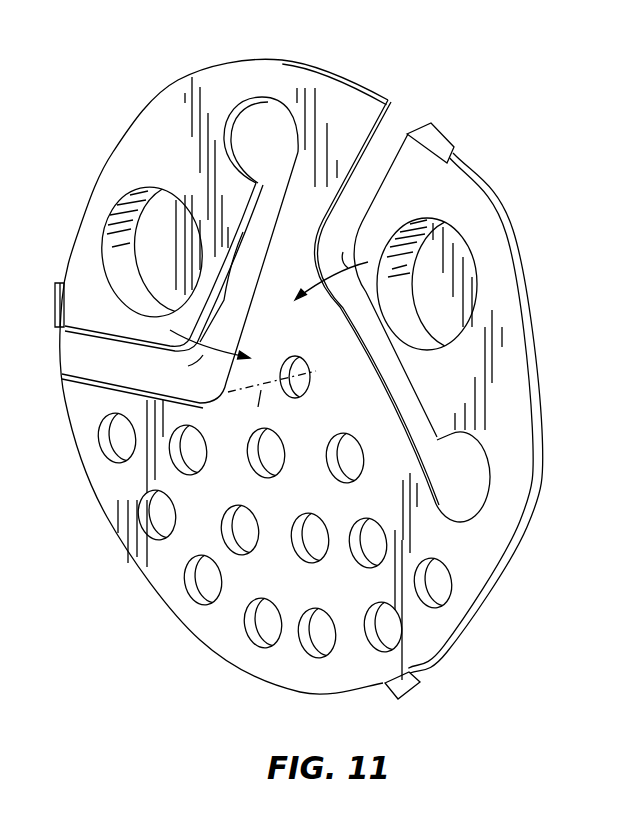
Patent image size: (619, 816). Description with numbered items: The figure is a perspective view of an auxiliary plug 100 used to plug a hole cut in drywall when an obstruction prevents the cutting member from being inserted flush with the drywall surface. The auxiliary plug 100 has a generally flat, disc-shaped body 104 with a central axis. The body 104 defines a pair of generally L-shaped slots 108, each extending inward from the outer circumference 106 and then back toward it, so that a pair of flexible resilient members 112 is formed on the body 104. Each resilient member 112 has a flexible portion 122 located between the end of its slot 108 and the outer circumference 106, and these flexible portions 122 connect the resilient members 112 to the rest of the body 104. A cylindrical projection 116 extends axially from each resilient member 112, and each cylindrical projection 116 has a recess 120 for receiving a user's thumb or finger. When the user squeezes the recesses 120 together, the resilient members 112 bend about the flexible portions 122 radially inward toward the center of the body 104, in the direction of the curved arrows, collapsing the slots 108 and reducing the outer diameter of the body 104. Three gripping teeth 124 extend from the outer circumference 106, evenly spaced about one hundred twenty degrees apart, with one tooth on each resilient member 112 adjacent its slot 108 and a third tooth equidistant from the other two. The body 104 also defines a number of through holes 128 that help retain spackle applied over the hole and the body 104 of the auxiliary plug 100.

The auxiliary plug 100 is at (135, 58).
The body 104 is at (433, 625).
The outer circumference 106 is at (537, 427).
The slots 108 is at (97, 338).
The resilient members 112 is at (118, 153).
The cylindrical projection 116 is at (517, 247).
The recess 120 is at (175, 204).
The flexible portion 122 is at (243, 82).
The gripping teeth 124 is at (55, 284).
The through holes 128 is at (223, 532).